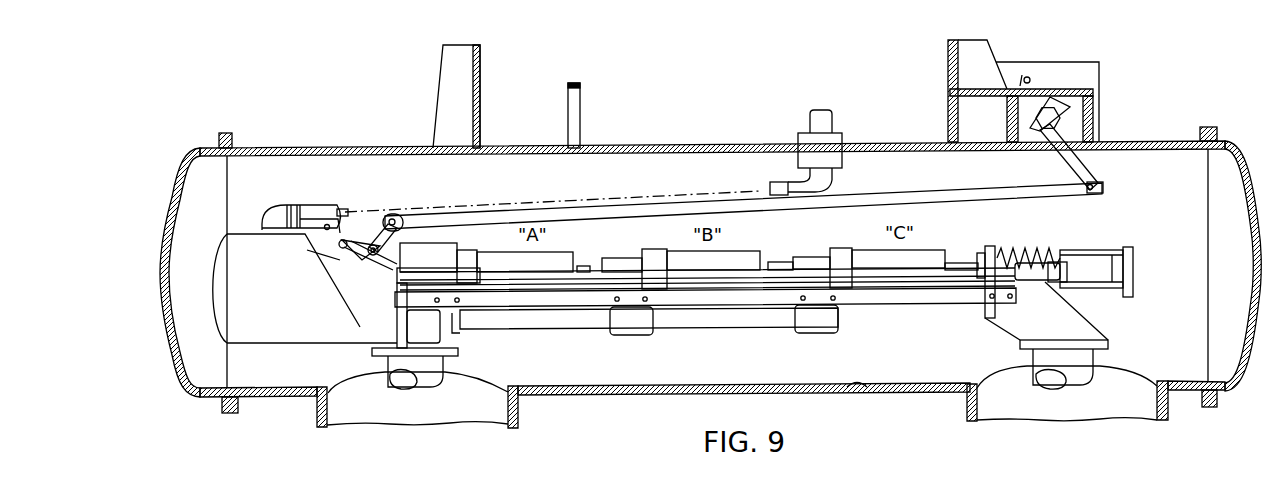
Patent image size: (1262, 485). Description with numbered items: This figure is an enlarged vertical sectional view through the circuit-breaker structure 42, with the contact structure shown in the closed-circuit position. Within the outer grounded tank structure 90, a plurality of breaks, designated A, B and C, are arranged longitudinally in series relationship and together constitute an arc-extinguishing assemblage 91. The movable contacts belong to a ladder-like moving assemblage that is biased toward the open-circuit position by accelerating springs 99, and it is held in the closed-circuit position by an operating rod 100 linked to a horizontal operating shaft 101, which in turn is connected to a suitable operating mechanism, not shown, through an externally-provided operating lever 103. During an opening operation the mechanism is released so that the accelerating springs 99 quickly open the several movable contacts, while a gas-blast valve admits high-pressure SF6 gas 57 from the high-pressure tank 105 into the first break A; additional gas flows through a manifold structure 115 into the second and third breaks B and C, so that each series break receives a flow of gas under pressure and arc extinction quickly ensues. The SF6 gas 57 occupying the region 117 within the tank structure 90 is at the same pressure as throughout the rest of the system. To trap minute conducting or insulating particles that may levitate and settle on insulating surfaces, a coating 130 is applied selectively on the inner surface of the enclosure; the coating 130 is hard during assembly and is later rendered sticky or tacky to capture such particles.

The circuit-breaker structure 42 is at (697, 112).
The SF6 gas 57 is at (573, 381).
The tank structure 90 is at (627, 397).
The arc-extinguishing assemblage 91 is at (662, 333).
The accelerating springs 99 is at (1018, 255).
The operating rod 100 is at (861, 196).
The horizontal operating shaft 101 is at (1050, 137).
The operating lever 103 is at (1033, 78).
The high-pressure tank 105 is at (291, 293).
The manifold structure 115 is at (751, 333).
The region 117 is at (907, 357).
The coating 130 is at (868, 392).